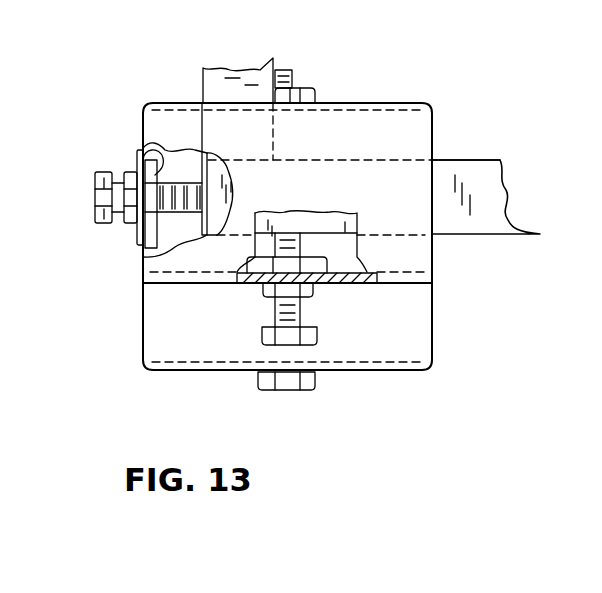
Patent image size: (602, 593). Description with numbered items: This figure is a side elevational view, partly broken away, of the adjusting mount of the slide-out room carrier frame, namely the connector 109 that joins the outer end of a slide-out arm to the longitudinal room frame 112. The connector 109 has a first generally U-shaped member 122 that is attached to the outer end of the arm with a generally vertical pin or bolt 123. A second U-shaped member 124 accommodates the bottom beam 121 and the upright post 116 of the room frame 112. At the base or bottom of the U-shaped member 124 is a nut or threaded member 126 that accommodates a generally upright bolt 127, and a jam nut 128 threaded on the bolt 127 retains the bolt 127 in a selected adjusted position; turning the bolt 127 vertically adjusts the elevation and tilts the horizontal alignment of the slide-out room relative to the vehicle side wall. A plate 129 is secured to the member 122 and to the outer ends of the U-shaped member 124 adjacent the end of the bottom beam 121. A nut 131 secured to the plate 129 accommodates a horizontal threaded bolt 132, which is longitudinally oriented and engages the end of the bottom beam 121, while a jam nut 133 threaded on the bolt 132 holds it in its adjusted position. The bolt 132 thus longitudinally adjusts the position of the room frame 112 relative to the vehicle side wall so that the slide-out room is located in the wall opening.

The connector assembly 109 is at (329, 198).
The room frame 112 is at (505, 156).
The upright post 116 is at (220, 88).
The bottom beam 121 is at (508, 212).
The first U-shaped member 122 is at (413, 348).
The bolt 123 is at (290, 78).
The second U-shaped member 124 is at (415, 258).
The nut 126 is at (322, 272).
The bolt 127 is at (297, 312).
The jam nut 128 is at (268, 287).
The plate 129 is at (138, 235).
The nut 131 is at (143, 150).
The bolt 132 is at (100, 197).
The jam nut 133 is at (130, 217).